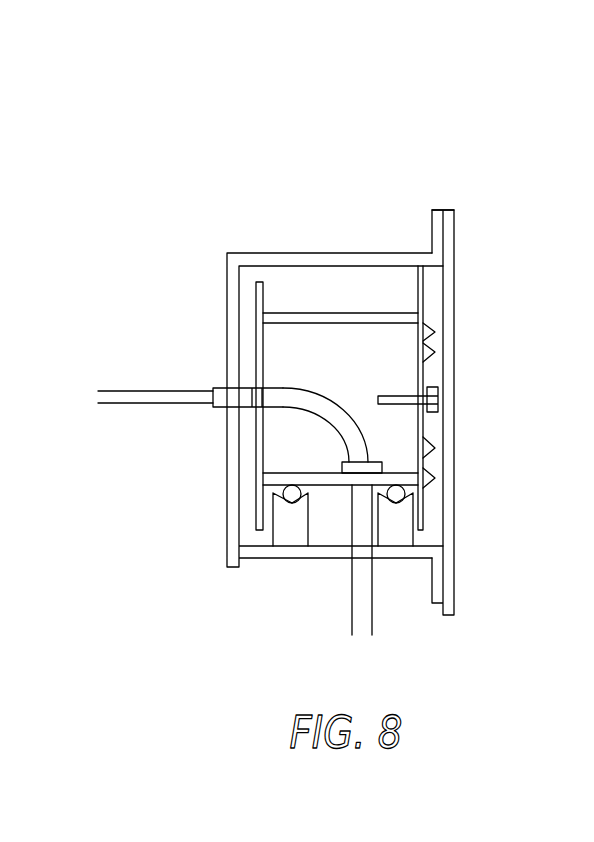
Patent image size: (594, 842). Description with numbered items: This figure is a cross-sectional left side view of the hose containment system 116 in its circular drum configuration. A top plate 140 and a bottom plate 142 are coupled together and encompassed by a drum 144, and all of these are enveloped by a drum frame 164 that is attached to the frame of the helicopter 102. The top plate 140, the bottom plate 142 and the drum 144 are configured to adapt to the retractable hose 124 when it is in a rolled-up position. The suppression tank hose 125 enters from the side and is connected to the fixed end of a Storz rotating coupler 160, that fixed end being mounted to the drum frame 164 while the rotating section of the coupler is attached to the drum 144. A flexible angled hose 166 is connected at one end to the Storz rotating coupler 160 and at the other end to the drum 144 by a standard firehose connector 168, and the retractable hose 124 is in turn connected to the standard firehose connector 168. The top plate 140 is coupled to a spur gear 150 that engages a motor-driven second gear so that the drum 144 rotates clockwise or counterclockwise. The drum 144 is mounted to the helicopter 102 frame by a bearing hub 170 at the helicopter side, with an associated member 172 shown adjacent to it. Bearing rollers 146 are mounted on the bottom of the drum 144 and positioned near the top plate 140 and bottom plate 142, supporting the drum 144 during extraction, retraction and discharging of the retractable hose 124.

The hose containment system 116 is at (436, 176).
The helicopter 102 is at (451, 261).
The drum frame 164 is at (225, 272).
The top plate 140 is at (418, 270).
The spur gear 150 is at (425, 323).
The bottom plate 142 is at (263, 282).
The drum 144 is at (337, 313).
The standard firehose connector 168 is at (375, 466).
The suppression tank hose 125 is at (127, 388).
The Storz rotating coupler 160 is at (221, 393).
The flexible angled hose 166 is at (302, 396).
The pin 172 is at (398, 397).
The bearing hub 170 is at (438, 390).
The bearing rollers 146 is at (295, 522).
The retractable hose 124 is at (372, 612).